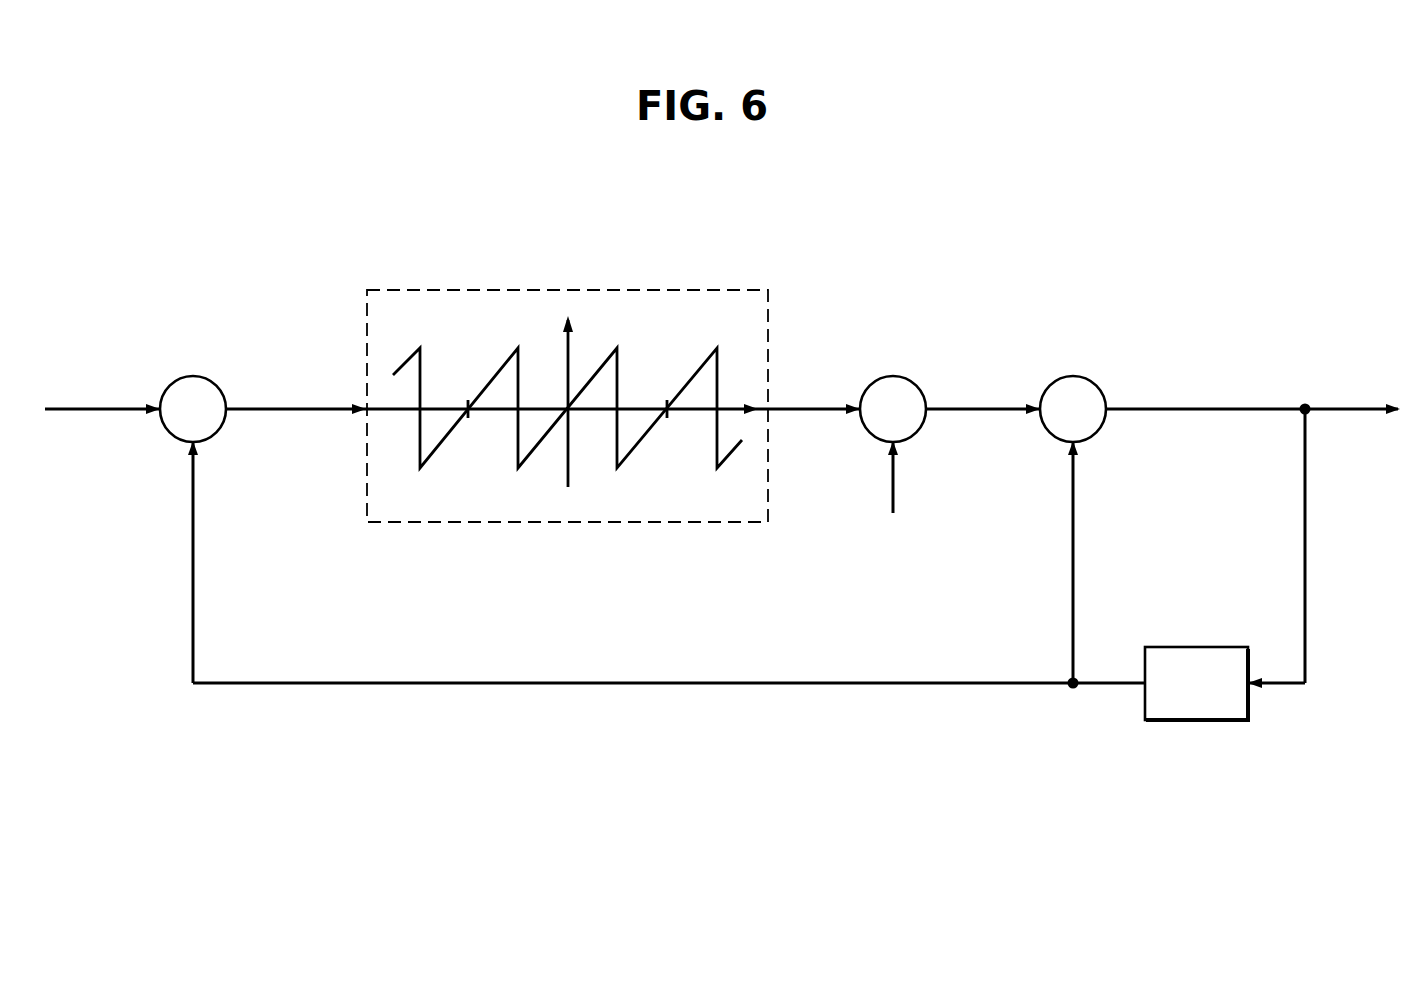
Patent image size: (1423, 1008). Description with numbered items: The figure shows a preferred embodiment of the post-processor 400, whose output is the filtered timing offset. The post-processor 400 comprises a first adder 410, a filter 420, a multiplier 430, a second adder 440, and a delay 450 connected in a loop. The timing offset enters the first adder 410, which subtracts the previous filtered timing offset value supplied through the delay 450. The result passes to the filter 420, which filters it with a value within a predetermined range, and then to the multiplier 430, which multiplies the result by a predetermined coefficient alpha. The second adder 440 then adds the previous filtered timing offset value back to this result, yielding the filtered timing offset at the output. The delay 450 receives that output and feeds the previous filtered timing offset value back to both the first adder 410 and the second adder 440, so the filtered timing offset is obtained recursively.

The post-processor 400 is at (1232, 252).
The first adder 410 is at (218, 432).
The filter 420 is at (560, 290).
The multiplier 430 is at (912, 375).
The second adder 440 is at (1088, 377).
The delay 450 is at (1190, 645).